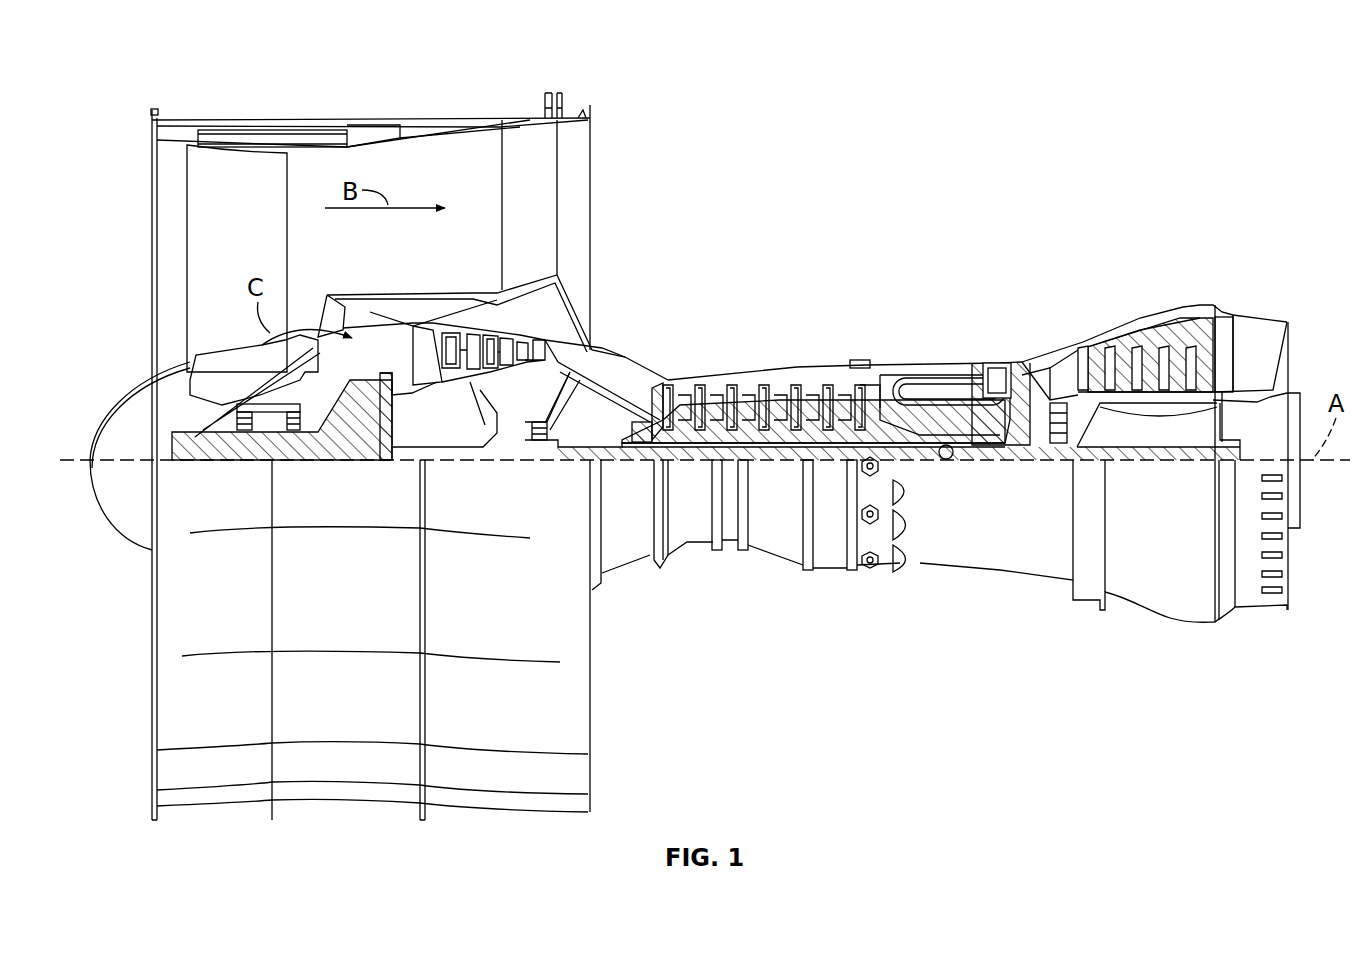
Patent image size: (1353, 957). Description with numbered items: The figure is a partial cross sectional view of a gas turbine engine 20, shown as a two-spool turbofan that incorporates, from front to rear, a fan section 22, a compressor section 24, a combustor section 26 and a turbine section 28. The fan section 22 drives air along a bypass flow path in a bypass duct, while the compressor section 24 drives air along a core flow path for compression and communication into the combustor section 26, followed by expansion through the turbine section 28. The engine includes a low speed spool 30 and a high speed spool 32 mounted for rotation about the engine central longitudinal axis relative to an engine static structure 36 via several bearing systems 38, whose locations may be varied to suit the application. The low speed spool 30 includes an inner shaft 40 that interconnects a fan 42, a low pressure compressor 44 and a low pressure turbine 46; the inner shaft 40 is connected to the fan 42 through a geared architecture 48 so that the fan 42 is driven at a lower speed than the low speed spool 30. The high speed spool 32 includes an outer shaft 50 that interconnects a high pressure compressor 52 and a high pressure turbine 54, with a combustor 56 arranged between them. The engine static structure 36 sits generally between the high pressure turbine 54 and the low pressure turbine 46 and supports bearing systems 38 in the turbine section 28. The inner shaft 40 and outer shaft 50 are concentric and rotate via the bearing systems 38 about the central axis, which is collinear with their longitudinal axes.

The gas turbine engine 20 is at (1062, 162).
The fan section 22 is at (400, 108).
The compressor section 24 is at (895, 233).
The combustor section 26 is at (975, 233).
The turbine section 28 is at (1232, 233).
The low speed spool 30 is at (783, 465).
The high speed spool 32 is at (870, 430).
The engine static structure 36 is at (830, 570).
The bearing systems 38 is at (246, 424).
The inner shaft 40 is at (620, 453).
The fan 42 is at (252, 240).
The low pressure compressor 44 is at (510, 338).
The low pressure turbine 46 is at (1148, 330).
The geared architecture 48 is at (382, 440).
The outer shaft 50 is at (946, 452).
The high pressure compressor 52 is at (735, 420).
The high pressure turbine 54 is at (993, 380).
The combustor 56 is at (930, 383).